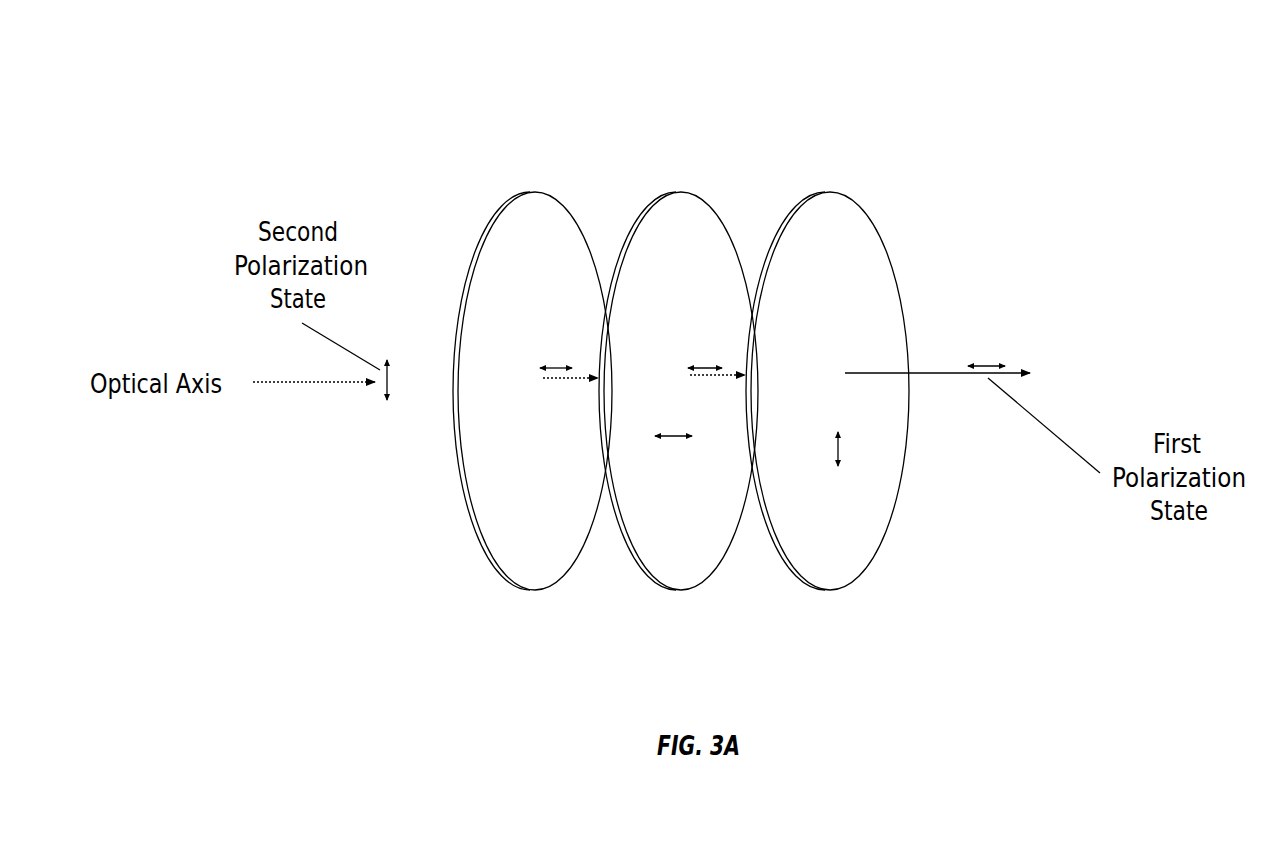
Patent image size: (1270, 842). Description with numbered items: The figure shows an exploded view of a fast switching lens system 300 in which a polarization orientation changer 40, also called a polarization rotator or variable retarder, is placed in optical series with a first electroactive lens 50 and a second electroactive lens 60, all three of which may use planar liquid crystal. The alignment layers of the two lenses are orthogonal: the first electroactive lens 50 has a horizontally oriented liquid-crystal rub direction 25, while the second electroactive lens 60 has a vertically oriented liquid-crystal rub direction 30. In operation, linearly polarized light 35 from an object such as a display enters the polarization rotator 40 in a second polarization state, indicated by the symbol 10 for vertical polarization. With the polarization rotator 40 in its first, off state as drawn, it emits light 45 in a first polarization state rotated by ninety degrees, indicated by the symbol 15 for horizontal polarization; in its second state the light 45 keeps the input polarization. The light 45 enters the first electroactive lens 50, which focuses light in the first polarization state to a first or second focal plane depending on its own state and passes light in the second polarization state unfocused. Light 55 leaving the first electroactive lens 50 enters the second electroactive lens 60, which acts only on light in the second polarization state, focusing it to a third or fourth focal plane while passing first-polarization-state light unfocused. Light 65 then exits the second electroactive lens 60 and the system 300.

The fast switching lens system 300 is at (400, 210).
The symbol for second polarization state 10 is at (391, 398).
The symbol for first polarization state 15 is at (777, 356).
The horizontally oriented liquid-crystal rub direction 25 is at (680, 454).
The vertically oriented liquid-crystal rub direction 30 is at (826, 449).
The linearly polarized light 35 is at (320, 387).
The polarization orientation changer 40 is at (535, 185).
The light exiting the polarization adjuster 45 is at (562, 383).
The first electroactive lens 50 is at (684, 190).
The light exiting the first electroactive lens 55 is at (715, 382).
The second electroactive lens 60 is at (836, 190).
The output light 65 is at (948, 378).